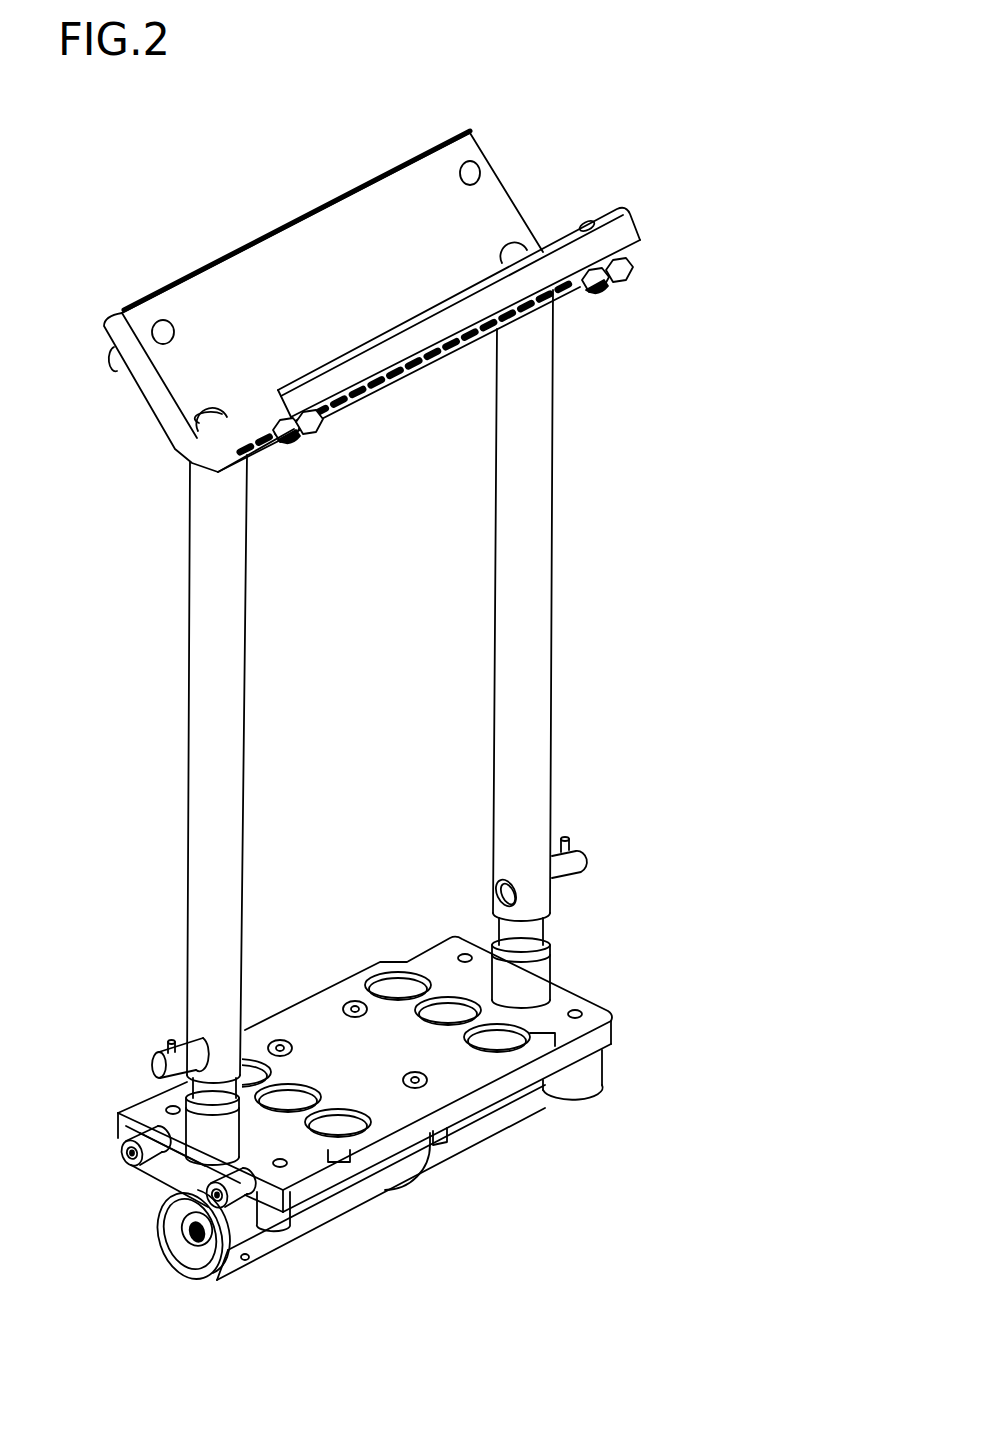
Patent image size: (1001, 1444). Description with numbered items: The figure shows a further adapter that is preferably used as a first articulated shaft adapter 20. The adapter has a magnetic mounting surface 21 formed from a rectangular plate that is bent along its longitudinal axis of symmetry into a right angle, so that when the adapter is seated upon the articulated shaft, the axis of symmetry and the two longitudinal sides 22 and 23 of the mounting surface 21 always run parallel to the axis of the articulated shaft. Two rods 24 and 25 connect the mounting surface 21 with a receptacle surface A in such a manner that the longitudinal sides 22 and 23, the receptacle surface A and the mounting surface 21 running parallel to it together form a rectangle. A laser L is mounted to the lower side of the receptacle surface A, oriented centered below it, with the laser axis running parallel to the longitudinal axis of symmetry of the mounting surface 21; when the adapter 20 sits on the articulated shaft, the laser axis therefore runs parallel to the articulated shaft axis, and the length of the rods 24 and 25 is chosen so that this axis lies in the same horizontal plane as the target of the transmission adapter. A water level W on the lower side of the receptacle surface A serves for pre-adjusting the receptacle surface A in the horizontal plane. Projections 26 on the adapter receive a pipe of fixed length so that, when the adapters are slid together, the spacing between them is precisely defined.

The first articulated shaft adapter 20 is at (682, 377).
The magnetic mounting surface 21 is at (172, 363).
The longitudinal side 22 is at (203, 267).
The longitudinal side 23 is at (618, 232).
The rod 24 is at (208, 852).
The rod 25 is at (538, 520).
The projection 26 is at (570, 858).
The receptacle surface A is at (430, 1100).
The water level (bubble level) W is at (585, 1075).
The laser L is at (237, 1260).